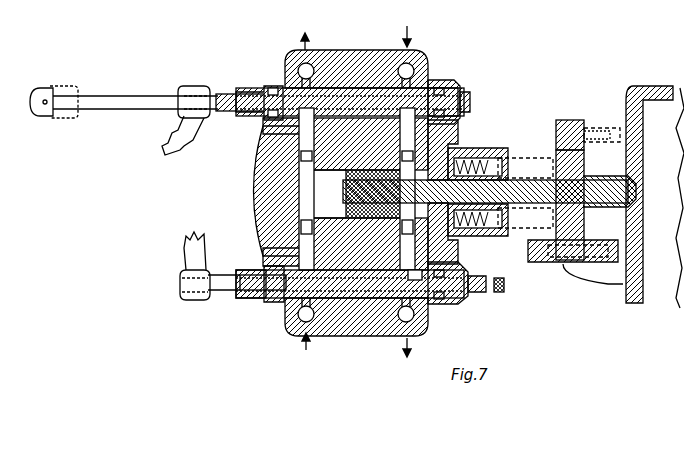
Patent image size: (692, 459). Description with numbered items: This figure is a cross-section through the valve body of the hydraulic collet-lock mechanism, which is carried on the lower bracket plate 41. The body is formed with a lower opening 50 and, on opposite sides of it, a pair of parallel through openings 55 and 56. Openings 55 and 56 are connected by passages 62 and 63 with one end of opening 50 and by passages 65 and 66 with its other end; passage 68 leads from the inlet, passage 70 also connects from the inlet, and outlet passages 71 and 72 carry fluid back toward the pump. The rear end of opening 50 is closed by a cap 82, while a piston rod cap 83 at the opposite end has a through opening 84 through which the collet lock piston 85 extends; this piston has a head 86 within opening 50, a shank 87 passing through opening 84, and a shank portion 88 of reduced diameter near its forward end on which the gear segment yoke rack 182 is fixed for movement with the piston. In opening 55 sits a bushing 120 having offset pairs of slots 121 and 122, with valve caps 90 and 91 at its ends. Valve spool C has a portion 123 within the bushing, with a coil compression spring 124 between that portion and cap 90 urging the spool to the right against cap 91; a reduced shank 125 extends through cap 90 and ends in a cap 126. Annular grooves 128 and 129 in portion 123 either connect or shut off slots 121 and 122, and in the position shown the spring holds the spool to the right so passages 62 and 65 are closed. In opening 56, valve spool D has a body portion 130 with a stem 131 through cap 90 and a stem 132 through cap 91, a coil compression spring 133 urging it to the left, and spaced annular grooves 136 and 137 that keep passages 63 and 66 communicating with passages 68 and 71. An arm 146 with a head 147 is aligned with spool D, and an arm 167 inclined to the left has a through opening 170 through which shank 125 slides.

The lower bracket plate 41 is at (566, 112).
The lower opening 50 is at (308, 172).
The through opening 55 is at (348, 78).
The through opening 56 is at (330, 292).
The passage 62 is at (270, 122).
The passage 63 is at (270, 242).
The passage 65 is at (425, 128).
The passage 66 is at (440, 240).
The passage 68 is at (290, 306).
The passage 70 is at (405, 60).
The outlet passage 71 is at (406, 312).
The second outlet passage 72 is at (296, 63).
The cap 82 is at (240, 188).
The piston rod cap 83 is at (448, 140).
The through opening 84 is at (498, 162).
The collet lock piston 85 is at (536, 140).
The head 86 is at (345, 198).
The shank 87 is at (496, 196).
The shank portion of reduced diameter 88 is at (642, 150).
The valve cap 90 is at (262, 80).
The valve cap 91 is at (446, 80).
The bushing 120 is at (396, 345).
The slots 121 is at (258, 78).
The slots 122 is at (300, 118).
The portion 123 is at (462, 94).
The coil compression spring 124 is at (228, 86).
The reduced shank 125 is at (85, 102).
The cap 126 is at (27, 88).
The annular groove 128 is at (316, 78).
The annular groove / bushing 129 is at (440, 72).
The body portion 130 is at (338, 330).
The stem 131 is at (496, 276).
The stem 132 is at (215, 283).
The coil compression spring 133 is at (470, 292).
The annular groove 136 is at (270, 292).
The annular groove 137 is at (420, 300).
The arm 146 is at (178, 242).
The head 147 is at (172, 276).
The arm 167 is at (157, 147).
The through opening 170 is at (182, 78).
The gear segment yoke rack 182 is at (580, 125).